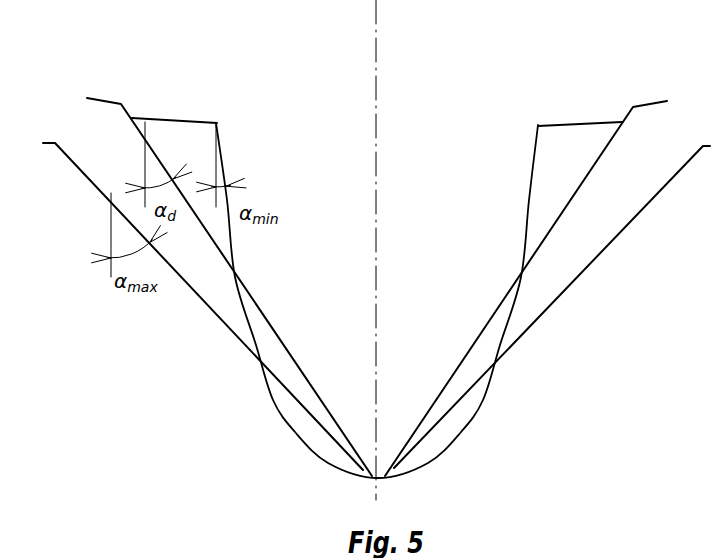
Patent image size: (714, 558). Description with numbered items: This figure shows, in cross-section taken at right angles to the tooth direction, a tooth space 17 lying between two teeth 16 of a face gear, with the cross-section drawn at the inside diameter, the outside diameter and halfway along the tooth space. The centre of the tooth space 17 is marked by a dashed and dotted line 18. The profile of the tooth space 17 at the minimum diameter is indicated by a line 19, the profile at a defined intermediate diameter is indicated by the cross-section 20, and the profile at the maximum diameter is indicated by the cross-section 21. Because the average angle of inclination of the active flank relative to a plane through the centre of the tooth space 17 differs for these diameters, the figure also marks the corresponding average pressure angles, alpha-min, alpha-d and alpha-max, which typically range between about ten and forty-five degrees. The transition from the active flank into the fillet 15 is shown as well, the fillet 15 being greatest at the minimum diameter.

The fillet 15 is at (392, 474).
The teeth 16 is at (180, 88).
The tooth space 17 is at (330, 200).
The dashed and dotted line 18 is at (375, 128).
The line indicating cross-section at minimum diameter 19 is at (530, 162).
The cross-section at defined diameter 20 is at (482, 332).
The cross-section at maximum diameter 21 is at (587, 270).